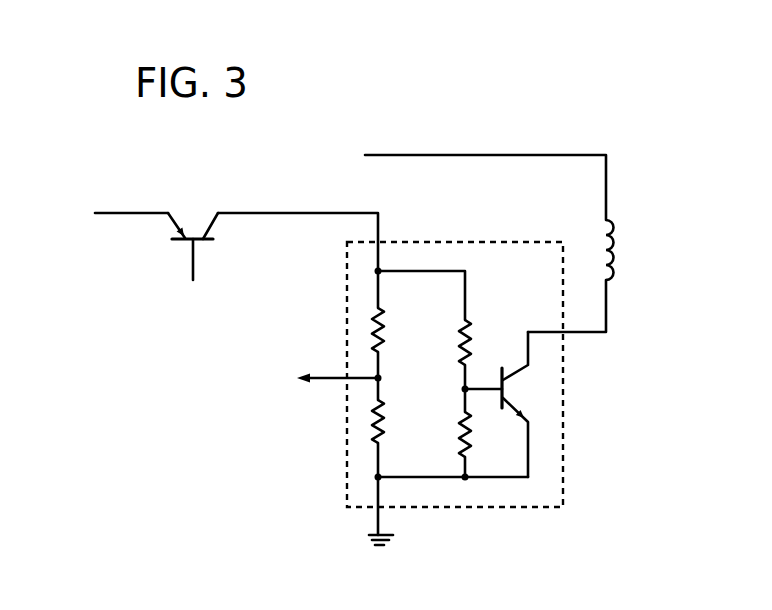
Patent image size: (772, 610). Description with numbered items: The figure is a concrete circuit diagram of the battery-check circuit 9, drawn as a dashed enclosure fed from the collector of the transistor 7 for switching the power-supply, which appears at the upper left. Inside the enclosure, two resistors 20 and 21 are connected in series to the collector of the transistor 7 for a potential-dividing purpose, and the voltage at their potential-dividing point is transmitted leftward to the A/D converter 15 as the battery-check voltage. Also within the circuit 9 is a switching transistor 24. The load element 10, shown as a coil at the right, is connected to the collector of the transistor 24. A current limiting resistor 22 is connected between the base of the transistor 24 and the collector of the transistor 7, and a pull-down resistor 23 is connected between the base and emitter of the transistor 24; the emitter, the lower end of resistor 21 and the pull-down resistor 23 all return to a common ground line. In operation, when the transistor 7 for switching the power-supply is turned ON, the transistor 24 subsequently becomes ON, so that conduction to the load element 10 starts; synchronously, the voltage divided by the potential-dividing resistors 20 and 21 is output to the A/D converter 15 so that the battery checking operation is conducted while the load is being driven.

The transistor for switching the power-supply 7 is at (195, 210).
The battery-check circuit 9 is at (563, 477).
The load element 10 is at (620, 262).
The A/D converter 15 is at (212, 383).
The resistor 20 is at (388, 333).
The resistor 21 is at (387, 427).
The current limiting resistor 22 is at (472, 345).
The pull-down resistor 23 is at (458, 430).
The switching transistor 24 is at (522, 389).